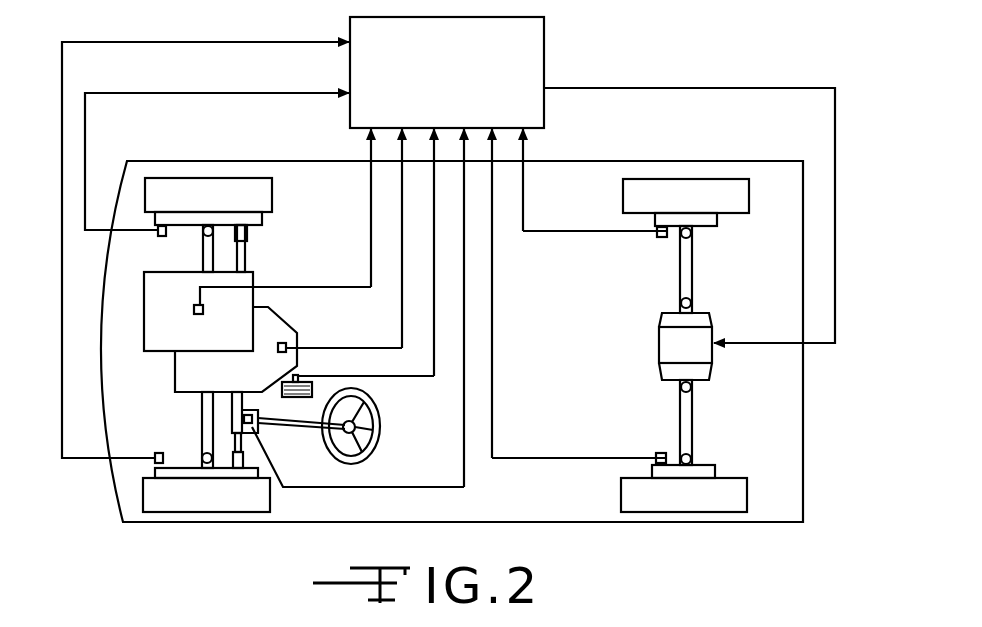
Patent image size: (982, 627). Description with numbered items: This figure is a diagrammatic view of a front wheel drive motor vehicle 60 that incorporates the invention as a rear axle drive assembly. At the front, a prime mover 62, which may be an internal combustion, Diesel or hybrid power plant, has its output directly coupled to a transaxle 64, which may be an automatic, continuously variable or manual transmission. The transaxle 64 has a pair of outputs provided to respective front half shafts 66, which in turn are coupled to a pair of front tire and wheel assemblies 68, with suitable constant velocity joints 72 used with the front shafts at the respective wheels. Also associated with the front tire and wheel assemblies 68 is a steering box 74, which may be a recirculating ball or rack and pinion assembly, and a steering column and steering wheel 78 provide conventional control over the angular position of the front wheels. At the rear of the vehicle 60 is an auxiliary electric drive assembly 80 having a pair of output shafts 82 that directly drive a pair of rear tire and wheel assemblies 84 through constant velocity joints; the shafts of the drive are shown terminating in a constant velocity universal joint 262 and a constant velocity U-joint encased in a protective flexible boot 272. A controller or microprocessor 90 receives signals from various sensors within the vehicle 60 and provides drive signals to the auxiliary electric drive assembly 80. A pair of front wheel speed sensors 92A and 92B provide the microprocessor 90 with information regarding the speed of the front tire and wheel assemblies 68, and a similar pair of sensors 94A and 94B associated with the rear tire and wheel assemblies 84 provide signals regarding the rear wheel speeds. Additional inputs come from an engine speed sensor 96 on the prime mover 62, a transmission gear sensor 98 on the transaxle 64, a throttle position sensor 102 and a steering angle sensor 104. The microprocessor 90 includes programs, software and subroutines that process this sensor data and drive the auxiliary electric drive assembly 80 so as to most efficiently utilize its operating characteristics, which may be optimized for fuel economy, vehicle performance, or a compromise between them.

The motor vehicle 60 is at (707, 58).
The prime mover 62 is at (177, 305).
The transaxle 64 is at (278, 327).
The front half shafts 66 is at (213, 252).
The front tire and wheel assemblies 68 is at (182, 168).
The constant velocity joints 72 is at (207, 463).
The steering box 74 is at (208, 225).
The steering column and steering wheel 78 is at (367, 391).
The auxiliary electric drive assembly 80 is at (648, 347).
The output shafts 82 is at (690, 267).
The rear tire and wheel assemblies 84 is at (702, 170).
The controller or microprocessor 90 is at (462, 85).
The front wheel speed sensor 92A is at (162, 452).
The front wheel speed sensor 92B is at (164, 238).
The rear wheel speed sensor 94A is at (661, 452).
The rear wheel speed sensor 94B is at (661, 240).
The engine speed sensor 96 is at (202, 316).
The transmission gear sensor 98 is at (279, 351).
The throttle position sensor 102 is at (297, 375).
The steering angle sensor 104 is at (253, 427).
The constant velocity universal joint 262 is at (692, 388).
The protective flexible boot 272 is at (692, 303).